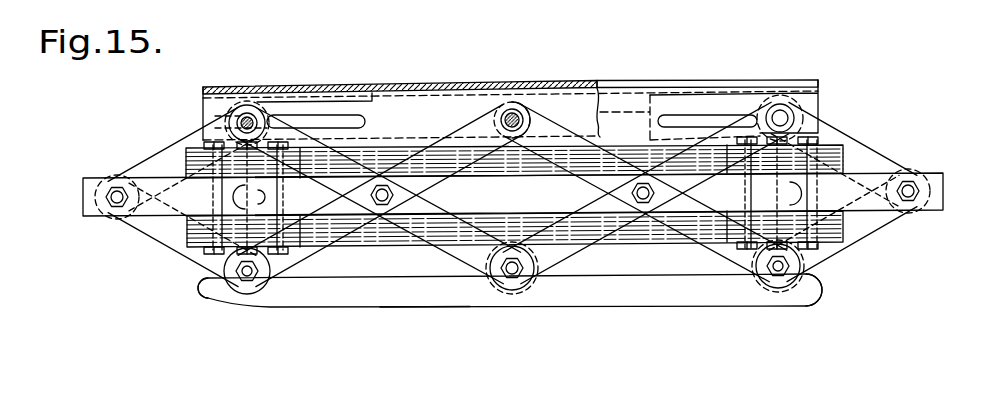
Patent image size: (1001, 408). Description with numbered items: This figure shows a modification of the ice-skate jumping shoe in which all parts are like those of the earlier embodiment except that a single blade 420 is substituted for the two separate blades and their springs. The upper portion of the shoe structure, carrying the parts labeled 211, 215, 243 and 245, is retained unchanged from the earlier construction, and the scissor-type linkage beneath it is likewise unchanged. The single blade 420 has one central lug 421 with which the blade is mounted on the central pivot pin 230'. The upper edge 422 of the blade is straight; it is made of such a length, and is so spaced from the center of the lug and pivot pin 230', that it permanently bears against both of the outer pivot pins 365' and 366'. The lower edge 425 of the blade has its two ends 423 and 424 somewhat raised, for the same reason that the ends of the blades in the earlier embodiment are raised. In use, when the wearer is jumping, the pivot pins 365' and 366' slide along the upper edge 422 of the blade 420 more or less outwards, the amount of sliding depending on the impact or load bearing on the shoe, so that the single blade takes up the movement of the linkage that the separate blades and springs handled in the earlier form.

The upper rail member 211 is at (432, 82).
The center pivot plate 215 is at (527, 84).
The upper pivot pin 243 is at (244, 106).
The slotted link plate 245 is at (317, 102).
The central lug 421 is at (530, 259).
The upper edge 422 is at (368, 277).
The single blade 420 is at (369, 297).
The end of the lower edge 423 is at (216, 296).
The end of the lower edge 424 is at (824, 290).
The lower edge 425 is at (424, 308).
The pivot pin 230' is at (534, 294).
The pivot pin 365' is at (205, 271).
The pivot pin 366' is at (826, 266).